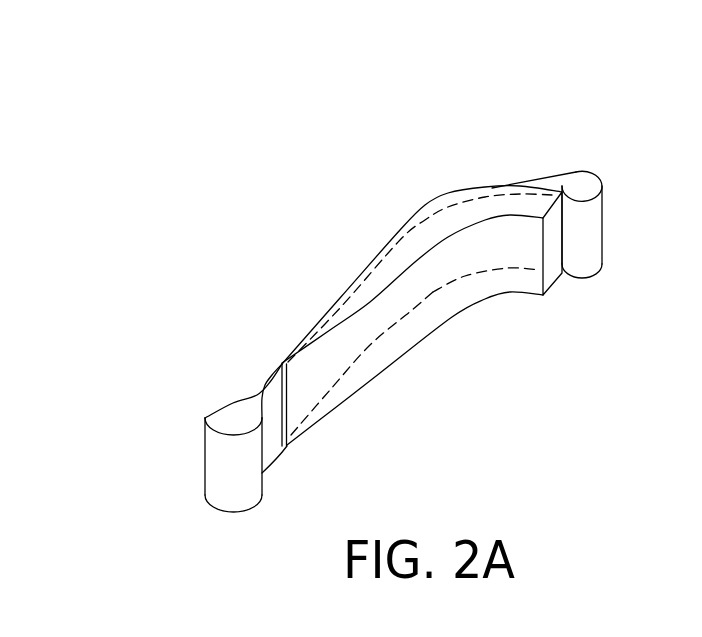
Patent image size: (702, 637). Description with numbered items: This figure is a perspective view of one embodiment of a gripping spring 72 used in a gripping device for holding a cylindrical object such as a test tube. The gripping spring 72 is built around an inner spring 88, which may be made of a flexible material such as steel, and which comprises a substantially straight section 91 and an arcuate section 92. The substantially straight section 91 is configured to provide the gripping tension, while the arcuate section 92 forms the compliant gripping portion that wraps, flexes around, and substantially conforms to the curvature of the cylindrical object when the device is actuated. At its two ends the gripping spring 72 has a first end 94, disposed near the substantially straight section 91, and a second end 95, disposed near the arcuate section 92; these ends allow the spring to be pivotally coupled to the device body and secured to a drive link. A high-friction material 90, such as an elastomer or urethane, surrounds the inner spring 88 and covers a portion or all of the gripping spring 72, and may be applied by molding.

The gripping spring 72 is at (300, 207).
The inner spring 88 is at (533, 173).
The high-friction material 90 is at (495, 297).
The substantially straight section 91 is at (367, 353).
The arcuate section 92 is at (433, 292).
The first end 94 is at (205, 453).
The second end 95 is at (602, 223).